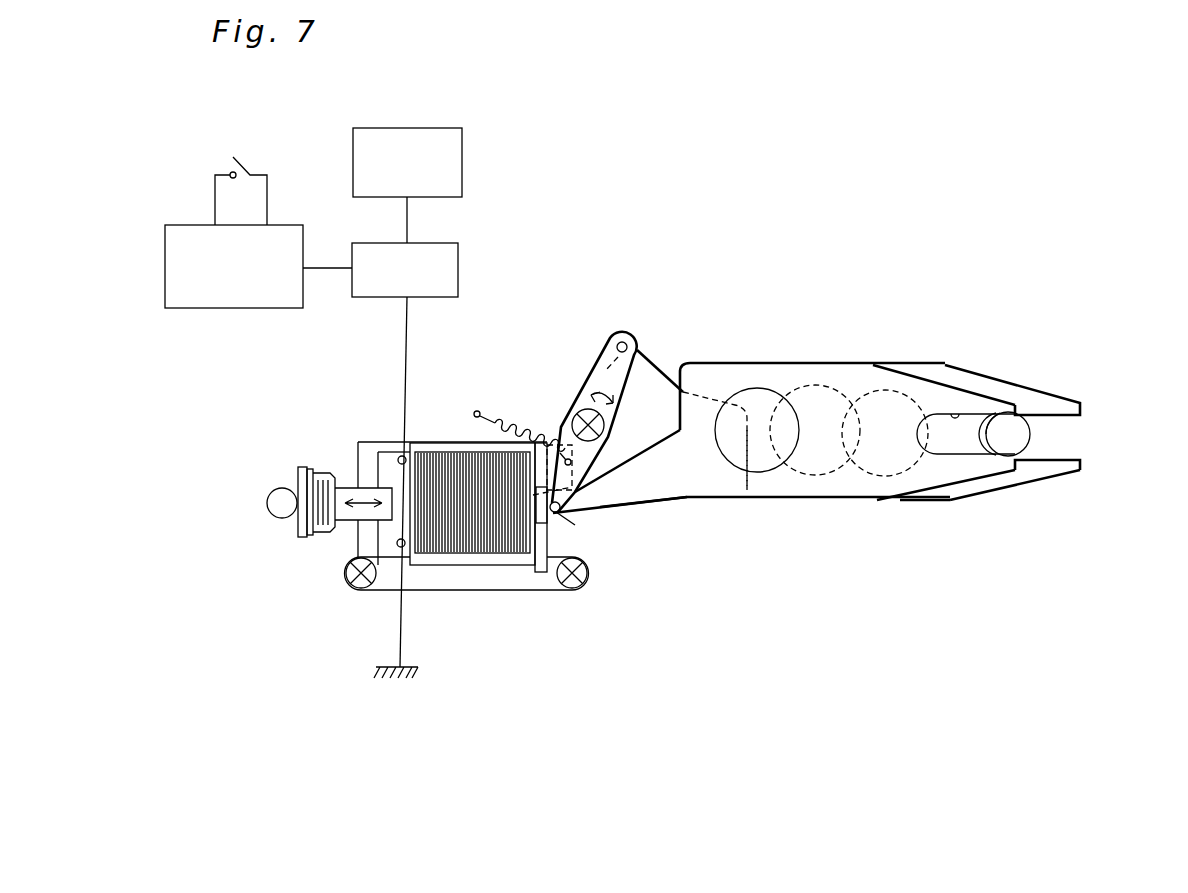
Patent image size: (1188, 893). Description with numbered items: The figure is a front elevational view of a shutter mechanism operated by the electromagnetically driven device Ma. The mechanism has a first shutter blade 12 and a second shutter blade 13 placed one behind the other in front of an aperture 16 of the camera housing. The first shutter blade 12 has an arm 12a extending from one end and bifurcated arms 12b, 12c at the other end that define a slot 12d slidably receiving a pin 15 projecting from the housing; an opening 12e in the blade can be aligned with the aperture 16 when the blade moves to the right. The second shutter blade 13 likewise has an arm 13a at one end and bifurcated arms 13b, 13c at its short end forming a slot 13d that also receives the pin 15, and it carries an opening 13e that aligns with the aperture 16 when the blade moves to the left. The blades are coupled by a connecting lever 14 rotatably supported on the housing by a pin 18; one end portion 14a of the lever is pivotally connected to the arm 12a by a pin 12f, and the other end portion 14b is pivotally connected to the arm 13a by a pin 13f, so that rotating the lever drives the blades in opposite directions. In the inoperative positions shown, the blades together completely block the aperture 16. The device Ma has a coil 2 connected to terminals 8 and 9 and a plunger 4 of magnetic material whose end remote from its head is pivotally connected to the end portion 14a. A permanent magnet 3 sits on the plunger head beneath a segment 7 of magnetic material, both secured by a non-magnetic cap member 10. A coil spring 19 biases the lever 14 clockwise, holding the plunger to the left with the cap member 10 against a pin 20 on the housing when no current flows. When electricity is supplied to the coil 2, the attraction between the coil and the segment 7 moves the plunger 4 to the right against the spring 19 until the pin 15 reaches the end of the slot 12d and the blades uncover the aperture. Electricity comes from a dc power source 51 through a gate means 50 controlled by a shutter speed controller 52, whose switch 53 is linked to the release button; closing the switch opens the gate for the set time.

The coil 2 is at (448, 457).
The permanent magnet 3 is at (320, 532).
The plunger 4 is at (355, 490).
The segment 7 is at (303, 483).
The terminal 8 is at (401, 456).
The terminal 9 is at (400, 547).
The cap member 10 is at (300, 538).
The first shutter blade 12 is at (851, 498).
The arm 12a is at (655, 492).
The bifurcated arm 12b is at (992, 463).
The bifurcated arm 12c is at (983, 400).
The slot 12d is at (955, 412).
The opening 12e is at (732, 478).
The pin 12f is at (565, 520).
The second shutter blade 13 is at (947, 500).
The arm 13a is at (668, 368).
The bifurcated arm 13b is at (1037, 470).
The bifurcated arm 13c is at (1067, 407).
The slot 13d is at (1053, 459).
The opening 13e is at (902, 390).
The pin 13f is at (622, 340).
The connecting lever 14 is at (600, 377).
The end portion of lever 14a is at (565, 510).
The end portion of lever 14b is at (637, 345).
The pin 15 is at (1010, 427).
The aperture 16 is at (815, 387).
The pin 18 is at (572, 418).
The coil spring 19 is at (521, 424).
The pin 20 is at (267, 503).
The gate means 50 is at (459, 258).
The dc power source 51 is at (425, 128).
The shutter speed controller 52 is at (226, 308).
The switch 53 is at (247, 162).
The electromagnetically driven device Ma is at (455, 596).